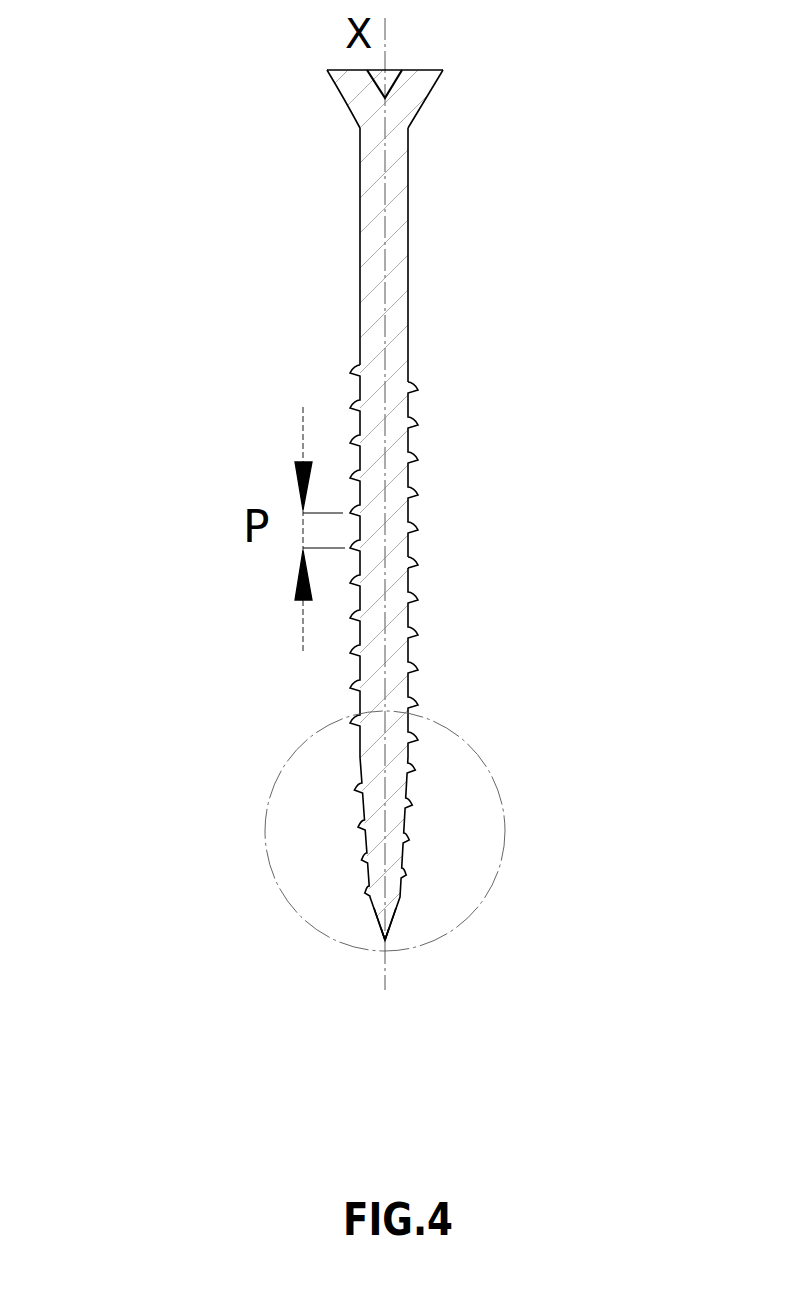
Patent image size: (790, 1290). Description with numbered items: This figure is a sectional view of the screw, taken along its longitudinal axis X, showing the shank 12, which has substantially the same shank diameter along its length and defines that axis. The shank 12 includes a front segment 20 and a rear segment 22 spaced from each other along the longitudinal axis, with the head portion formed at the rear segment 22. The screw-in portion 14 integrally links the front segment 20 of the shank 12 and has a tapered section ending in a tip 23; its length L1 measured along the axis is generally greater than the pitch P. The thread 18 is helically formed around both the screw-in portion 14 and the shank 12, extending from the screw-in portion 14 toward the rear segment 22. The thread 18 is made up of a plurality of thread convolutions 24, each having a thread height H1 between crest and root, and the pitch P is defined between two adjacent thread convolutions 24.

The shank 12 is at (402, 270).
The screw-in portion 14 is at (385, 940).
The thread 18 is at (408, 420).
The front segment 20 is at (405, 758).
The rear segment 22 is at (370, 150).
The tip 23 is at (386, 942).
The thread convolution 24 is at (412, 562).